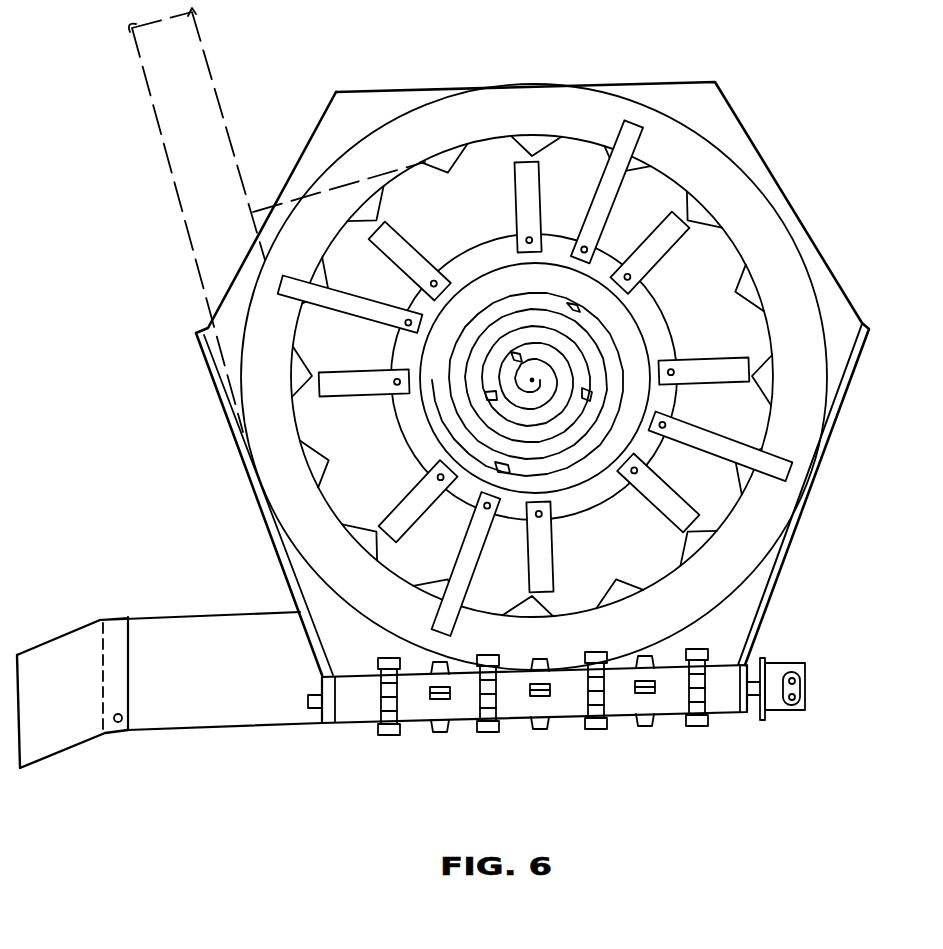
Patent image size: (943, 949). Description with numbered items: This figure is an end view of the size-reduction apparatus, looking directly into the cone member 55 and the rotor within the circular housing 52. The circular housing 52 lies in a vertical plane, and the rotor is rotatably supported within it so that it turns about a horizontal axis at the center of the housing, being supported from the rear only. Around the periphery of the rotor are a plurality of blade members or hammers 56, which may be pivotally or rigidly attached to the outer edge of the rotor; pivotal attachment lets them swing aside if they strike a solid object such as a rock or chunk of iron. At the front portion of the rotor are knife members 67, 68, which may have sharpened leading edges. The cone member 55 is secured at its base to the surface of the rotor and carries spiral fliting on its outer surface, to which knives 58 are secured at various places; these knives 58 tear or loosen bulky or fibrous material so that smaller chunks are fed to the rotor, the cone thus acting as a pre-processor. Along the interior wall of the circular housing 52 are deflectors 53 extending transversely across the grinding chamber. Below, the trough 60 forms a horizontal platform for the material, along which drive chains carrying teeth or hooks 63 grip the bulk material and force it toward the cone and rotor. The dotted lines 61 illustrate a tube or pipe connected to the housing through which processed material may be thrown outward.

The circular housing 52 is at (668, 170).
The deflectors 53 is at (698, 213).
The cone member 55 is at (588, 356).
The blade members or hammers 56 is at (350, 393).
The knives 58 is at (577, 306).
The trough 60 is at (568, 720).
The dotted lines (tube or pipe) 61 is at (155, 153).
The teeth or hooks 63 is at (694, 650).
The knife members 67 is at (280, 293).
The knife members 68 is at (640, 138).